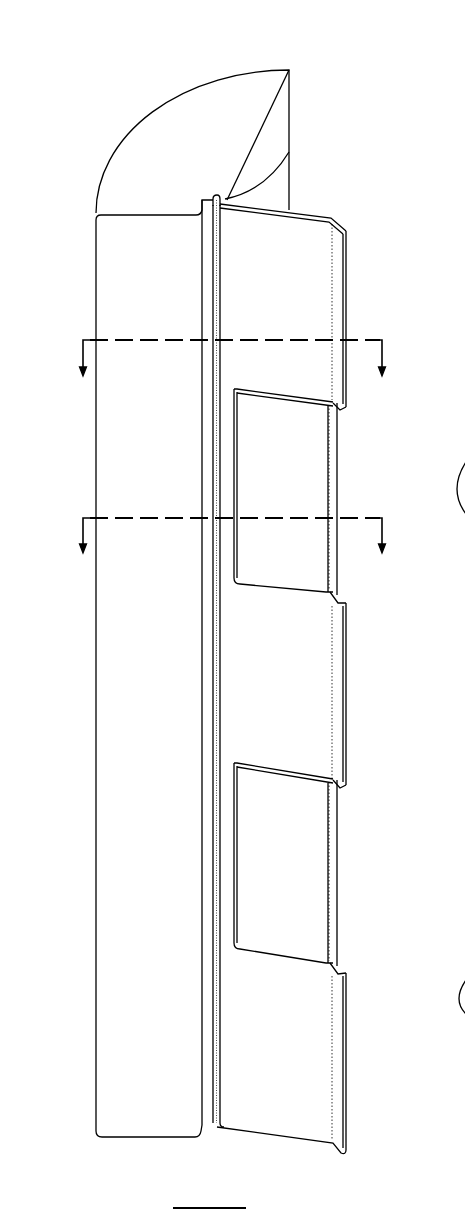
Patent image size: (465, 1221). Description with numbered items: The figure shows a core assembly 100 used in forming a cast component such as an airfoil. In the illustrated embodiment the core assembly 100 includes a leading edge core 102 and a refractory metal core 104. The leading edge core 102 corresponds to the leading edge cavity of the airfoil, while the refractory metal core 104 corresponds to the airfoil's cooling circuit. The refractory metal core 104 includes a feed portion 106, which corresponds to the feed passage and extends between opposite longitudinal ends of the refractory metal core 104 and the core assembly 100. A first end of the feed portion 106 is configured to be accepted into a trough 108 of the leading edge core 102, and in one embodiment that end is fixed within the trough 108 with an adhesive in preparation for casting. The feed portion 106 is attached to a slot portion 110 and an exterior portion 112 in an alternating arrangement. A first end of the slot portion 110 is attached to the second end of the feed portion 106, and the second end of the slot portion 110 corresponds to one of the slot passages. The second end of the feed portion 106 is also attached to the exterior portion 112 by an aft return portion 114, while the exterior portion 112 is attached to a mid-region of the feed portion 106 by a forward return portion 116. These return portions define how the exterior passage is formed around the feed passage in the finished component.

The core assembly 100 is at (392, 101).
The leading edge core 102 is at (302, 62).
The refractory metal core 104 is at (375, 223).
The feed portion 106 is at (310, 207).
The trough 108 is at (221, 195).
The slot portion 110 is at (352, 306).
The exterior portion 112 is at (310, 501).
The aft return portion 114 is at (335, 558).
The forward return portion 116 is at (235, 493).